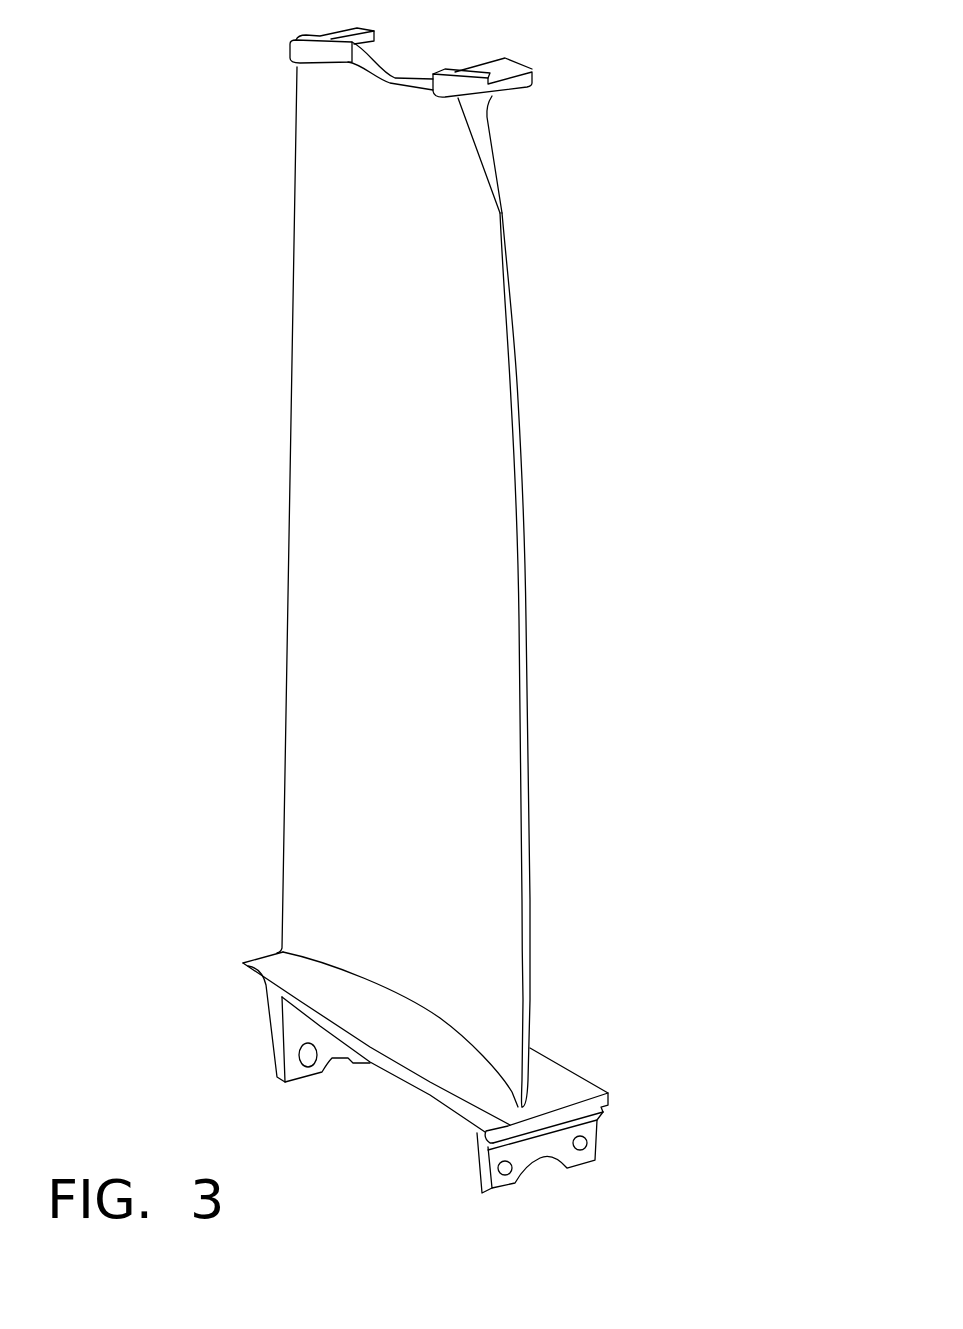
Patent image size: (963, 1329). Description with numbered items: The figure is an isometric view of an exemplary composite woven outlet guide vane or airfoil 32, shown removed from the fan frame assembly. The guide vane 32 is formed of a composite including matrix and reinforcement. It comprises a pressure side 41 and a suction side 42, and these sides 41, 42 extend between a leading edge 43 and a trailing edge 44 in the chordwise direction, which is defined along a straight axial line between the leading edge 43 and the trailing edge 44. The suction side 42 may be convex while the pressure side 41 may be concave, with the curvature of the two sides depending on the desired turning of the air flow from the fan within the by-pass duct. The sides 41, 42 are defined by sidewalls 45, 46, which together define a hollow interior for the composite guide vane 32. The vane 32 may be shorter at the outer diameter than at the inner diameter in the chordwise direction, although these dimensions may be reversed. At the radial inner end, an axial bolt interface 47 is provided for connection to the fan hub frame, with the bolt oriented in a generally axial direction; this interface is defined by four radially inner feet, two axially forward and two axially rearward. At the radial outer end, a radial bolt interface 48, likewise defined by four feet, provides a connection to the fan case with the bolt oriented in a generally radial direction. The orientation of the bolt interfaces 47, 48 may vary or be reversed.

The outlet guide vane 32 is at (392, 613).
The pressure side 41 is at (437, 587).
The suction side 42 is at (533, 508).
The leading edge 43 is at (290, 500).
The trailing edge 44 is at (528, 728).
The sidewall 45 is at (403, 488).
The sidewall 46 is at (447, 455).
The axial bolt interface 47 is at (595, 1172).
The radial bolt interface 48 is at (537, 47).